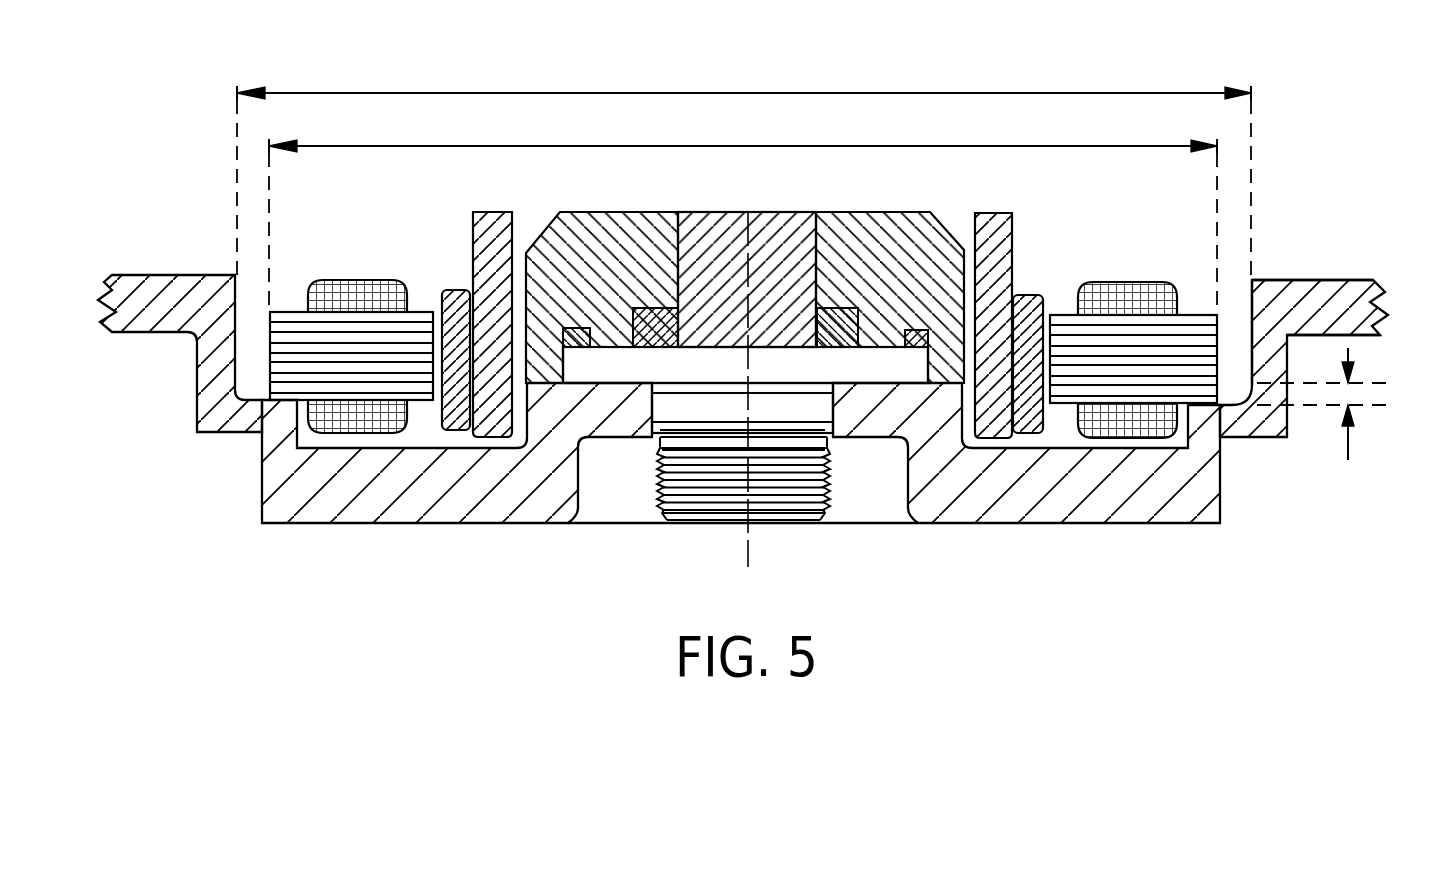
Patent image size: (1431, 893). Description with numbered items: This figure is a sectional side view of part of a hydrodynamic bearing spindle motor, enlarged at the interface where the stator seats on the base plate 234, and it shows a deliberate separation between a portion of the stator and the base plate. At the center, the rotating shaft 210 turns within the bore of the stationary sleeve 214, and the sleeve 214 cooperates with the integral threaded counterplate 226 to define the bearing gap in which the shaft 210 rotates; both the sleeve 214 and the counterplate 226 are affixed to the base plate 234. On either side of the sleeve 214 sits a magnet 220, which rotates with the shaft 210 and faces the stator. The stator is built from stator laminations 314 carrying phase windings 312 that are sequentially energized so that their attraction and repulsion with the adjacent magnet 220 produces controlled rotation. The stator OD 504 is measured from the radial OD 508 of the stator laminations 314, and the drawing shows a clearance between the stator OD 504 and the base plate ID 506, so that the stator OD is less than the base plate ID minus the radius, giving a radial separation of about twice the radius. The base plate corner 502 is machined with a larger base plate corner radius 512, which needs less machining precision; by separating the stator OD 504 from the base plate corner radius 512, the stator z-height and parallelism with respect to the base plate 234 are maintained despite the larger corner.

The shaft 210 is at (758, 237).
The sleeve 214 is at (850, 237).
The magnet 220 is at (1022, 293).
The counterplate 226 is at (817, 375).
The base plate 234 is at (1080, 506).
The phase windings 312 is at (357, 287).
The stator laminations 314 is at (283, 325).
The base plate corner 502 is at (207, 431).
The stator OD 504 is at (932, 146).
The base plate ID 506 is at (670, 97).
The radial OD of stator laminations 508 is at (1250, 282).
The base plate corner radius 512 is at (1349, 448).